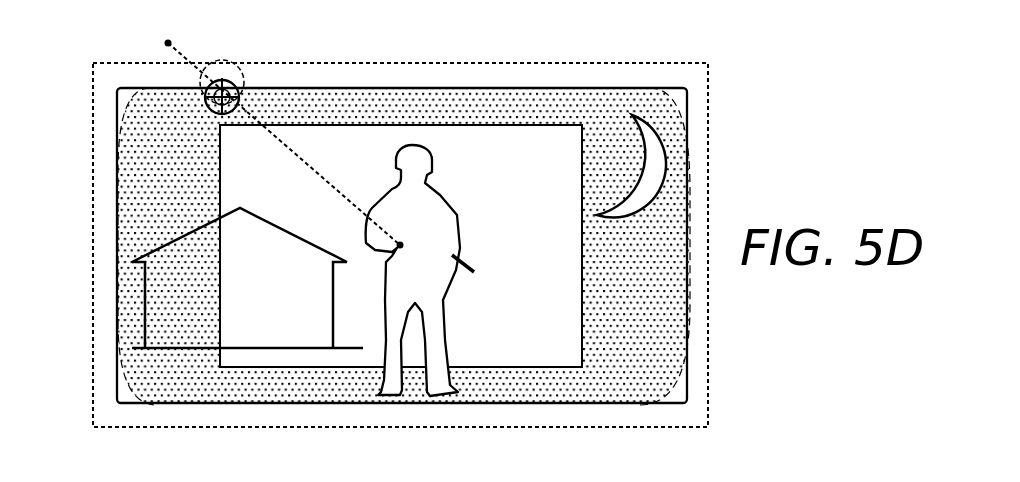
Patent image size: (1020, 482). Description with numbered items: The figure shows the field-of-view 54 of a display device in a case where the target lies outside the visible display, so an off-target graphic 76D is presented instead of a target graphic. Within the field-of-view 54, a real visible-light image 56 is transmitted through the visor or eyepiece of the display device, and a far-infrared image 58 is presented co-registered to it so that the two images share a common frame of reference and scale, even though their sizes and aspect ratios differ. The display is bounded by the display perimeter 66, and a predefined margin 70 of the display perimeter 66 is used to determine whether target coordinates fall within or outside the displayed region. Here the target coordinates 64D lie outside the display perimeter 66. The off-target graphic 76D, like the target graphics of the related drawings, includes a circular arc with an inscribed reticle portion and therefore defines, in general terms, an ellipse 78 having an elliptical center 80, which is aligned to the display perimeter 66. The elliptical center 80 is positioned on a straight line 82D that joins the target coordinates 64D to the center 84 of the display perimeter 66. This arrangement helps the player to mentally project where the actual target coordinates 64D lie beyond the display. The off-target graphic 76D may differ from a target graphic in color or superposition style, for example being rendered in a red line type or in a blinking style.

The predefined margin 70 is at (92, 110).
The display perimeter 66 is at (117, 375).
The field-of-view 54 is at (122, 168).
The far-infrared image 58 is at (258, 148).
The visible-light image 56 is at (200, 315).
The target coordinates 64D is at (179, 41).
The ellipse 78 is at (240, 72).
The elliptical center 80 is at (223, 82).
The off-target graphic 76D is at (258, 106).
The straight line 82D is at (303, 160).
The center of display perimeter 84 is at (413, 222).